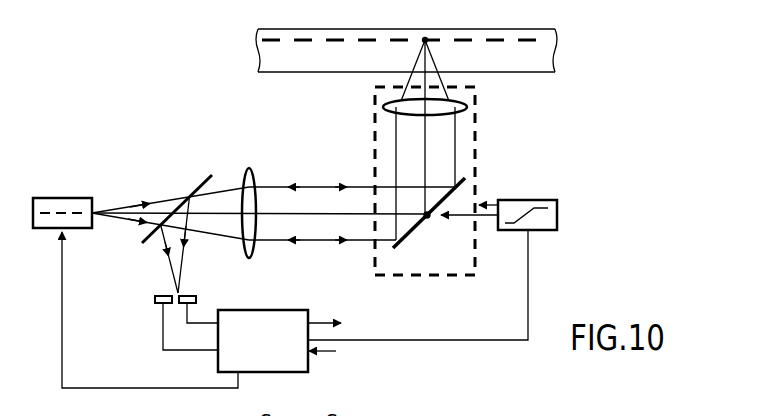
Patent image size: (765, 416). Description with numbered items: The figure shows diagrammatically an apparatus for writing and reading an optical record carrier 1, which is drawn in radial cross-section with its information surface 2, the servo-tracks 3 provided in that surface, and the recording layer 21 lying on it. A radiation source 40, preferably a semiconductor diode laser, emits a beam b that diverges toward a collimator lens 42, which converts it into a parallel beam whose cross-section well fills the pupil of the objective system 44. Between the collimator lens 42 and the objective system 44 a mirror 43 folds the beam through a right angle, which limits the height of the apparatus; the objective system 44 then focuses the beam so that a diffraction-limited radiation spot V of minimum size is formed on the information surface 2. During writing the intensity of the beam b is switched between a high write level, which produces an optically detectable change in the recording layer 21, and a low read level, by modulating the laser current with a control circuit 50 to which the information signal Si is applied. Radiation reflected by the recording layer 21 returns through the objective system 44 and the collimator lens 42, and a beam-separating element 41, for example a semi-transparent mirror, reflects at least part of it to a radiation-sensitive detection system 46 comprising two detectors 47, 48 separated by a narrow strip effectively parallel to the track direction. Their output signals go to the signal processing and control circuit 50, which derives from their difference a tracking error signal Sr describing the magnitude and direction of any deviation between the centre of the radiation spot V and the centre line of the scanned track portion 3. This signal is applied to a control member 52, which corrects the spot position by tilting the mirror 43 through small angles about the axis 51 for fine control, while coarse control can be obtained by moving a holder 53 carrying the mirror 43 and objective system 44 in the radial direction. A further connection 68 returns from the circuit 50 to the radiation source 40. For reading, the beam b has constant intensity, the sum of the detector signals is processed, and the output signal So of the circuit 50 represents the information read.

The record carrier 1 is at (474, 25).
The information surface 2 is at (289, 43).
The servo-tracks 3 is at (392, 39).
The recording layer 21 is at (498, 32).
The radiation spot V is at (424, 39).
The radiation source 40 is at (60, 197).
The beam-separating element 41 is at (177, 228).
The collimator lens 42 is at (255, 252).
The mirror 43 is at (413, 232).
The objective system 44 is at (466, 110).
The radiation-sensitive detection system 46 is at (189, 292).
The detector 47 is at (155, 299).
The detector 48 is at (196, 299).
The signal processing and control circuit 50 is at (265, 310).
The axis 51 is at (430, 218).
The control member 52 is at (556, 231).
The holder 53 is at (478, 166).
The feedback line 68 is at (152, 391).
The beam b is at (140, 204).
The output signal So is at (324, 308).
The information signal Si is at (323, 364).
The tracking error signal Sr is at (367, 340).